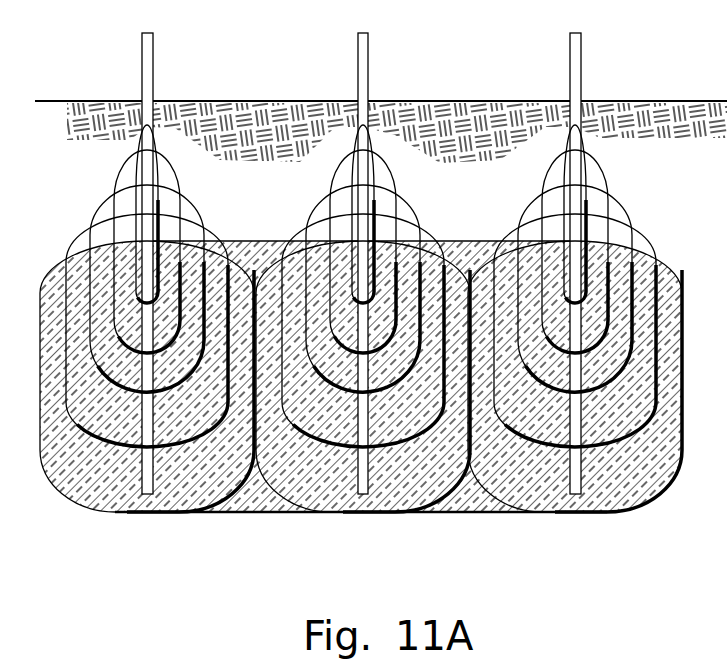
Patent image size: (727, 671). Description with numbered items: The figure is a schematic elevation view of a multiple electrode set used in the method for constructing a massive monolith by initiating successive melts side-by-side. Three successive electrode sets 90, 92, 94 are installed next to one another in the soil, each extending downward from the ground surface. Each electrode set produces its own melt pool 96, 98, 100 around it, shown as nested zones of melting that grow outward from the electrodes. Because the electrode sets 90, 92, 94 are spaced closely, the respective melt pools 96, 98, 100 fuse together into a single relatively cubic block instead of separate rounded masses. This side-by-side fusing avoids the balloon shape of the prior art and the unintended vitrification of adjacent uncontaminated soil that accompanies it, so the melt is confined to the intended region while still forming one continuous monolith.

The electrode set 90 is at (581, 65).
The electrode set 92 is at (369, 65).
The electrode set 94 is at (154, 65).
The melt pool 96 is at (627, 478).
The melt pool 98 is at (394, 478).
The melt pool 100 is at (180, 482).